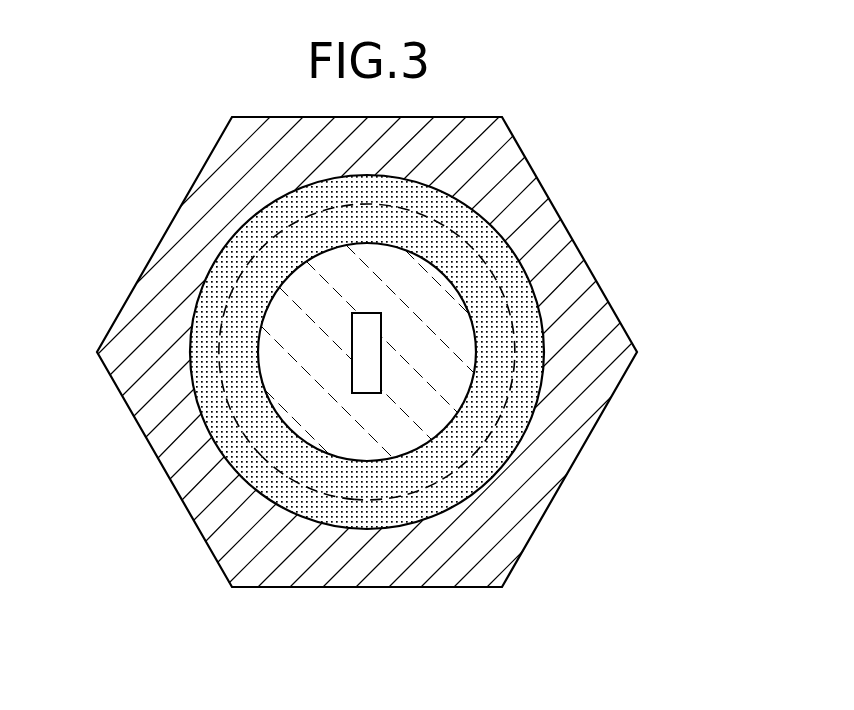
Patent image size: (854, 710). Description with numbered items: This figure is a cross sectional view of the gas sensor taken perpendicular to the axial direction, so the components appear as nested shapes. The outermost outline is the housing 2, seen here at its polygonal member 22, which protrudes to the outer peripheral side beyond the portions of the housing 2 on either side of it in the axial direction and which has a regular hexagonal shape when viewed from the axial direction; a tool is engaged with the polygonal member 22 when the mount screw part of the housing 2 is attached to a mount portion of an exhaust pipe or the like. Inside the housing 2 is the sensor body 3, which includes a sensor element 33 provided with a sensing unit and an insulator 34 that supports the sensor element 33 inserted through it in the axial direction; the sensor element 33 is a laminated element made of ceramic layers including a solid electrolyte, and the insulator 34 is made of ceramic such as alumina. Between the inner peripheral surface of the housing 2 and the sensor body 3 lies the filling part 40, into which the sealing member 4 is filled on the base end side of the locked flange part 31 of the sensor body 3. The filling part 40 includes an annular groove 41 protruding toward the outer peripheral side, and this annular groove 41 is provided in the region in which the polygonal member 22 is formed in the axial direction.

The housing 2 is at (545, 213).
The polygonal member 22 is at (587, 305).
The sensor body 3 is at (310, 300).
The sensor element 33 is at (365, 348).
The insulator 34 is at (310, 408).
The sealing member 4 is at (410, 488).
The filling part 40 is at (492, 402).
The annular groove 41 is at (487, 458).
The locked flange part 31 is at (322, 497).